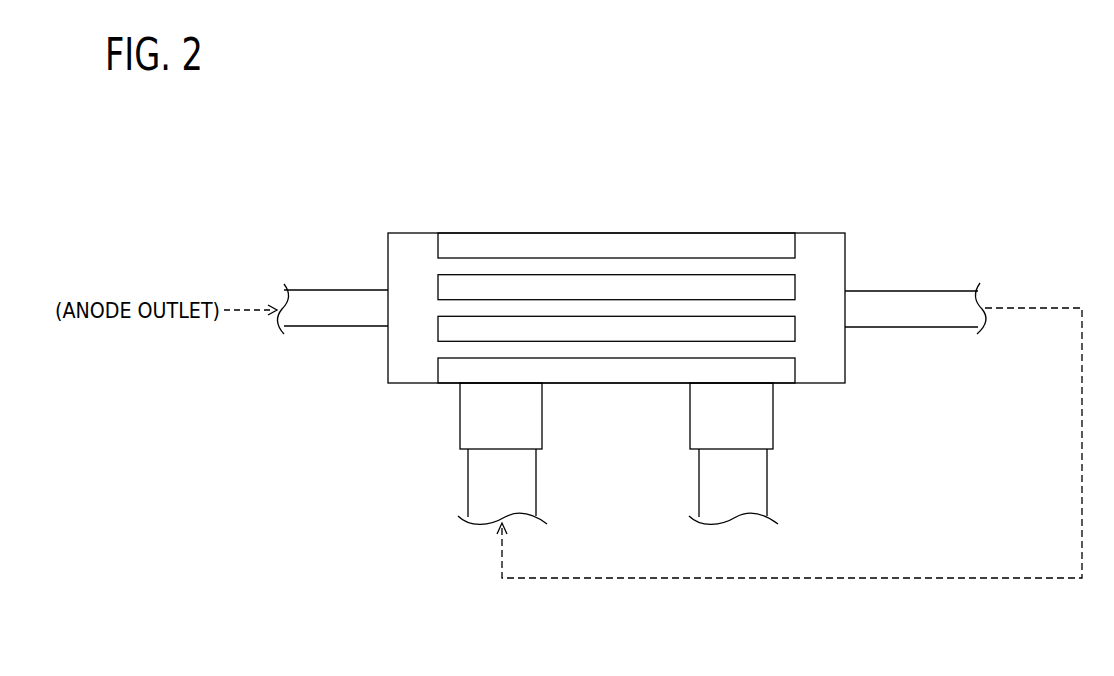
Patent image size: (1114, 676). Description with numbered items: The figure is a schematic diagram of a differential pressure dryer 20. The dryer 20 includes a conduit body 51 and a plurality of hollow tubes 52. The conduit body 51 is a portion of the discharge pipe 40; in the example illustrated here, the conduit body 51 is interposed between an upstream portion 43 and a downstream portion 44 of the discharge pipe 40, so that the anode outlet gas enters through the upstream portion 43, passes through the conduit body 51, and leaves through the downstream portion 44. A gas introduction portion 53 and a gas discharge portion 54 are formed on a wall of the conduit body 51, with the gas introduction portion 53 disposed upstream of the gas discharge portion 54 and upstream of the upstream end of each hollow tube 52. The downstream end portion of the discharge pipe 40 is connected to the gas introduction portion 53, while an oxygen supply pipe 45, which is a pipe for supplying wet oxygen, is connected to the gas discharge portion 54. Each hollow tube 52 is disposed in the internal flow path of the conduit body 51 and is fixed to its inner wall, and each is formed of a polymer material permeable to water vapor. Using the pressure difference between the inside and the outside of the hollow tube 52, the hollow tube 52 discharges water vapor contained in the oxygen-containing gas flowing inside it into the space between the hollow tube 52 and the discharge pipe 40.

The dryer 20 is at (386, 408).
The discharge pipe 40 is at (878, 158).
The upstream portion 43 is at (331, 290).
The downstream portion 44 is at (885, 291).
The oxygen supply pipe 45 is at (748, 482).
The conduit body 51 is at (610, 233).
The hollow tubes 52 is at (462, 373).
The gas introduction portion 53 is at (522, 422).
The gas discharge portion 54 is at (753, 422).